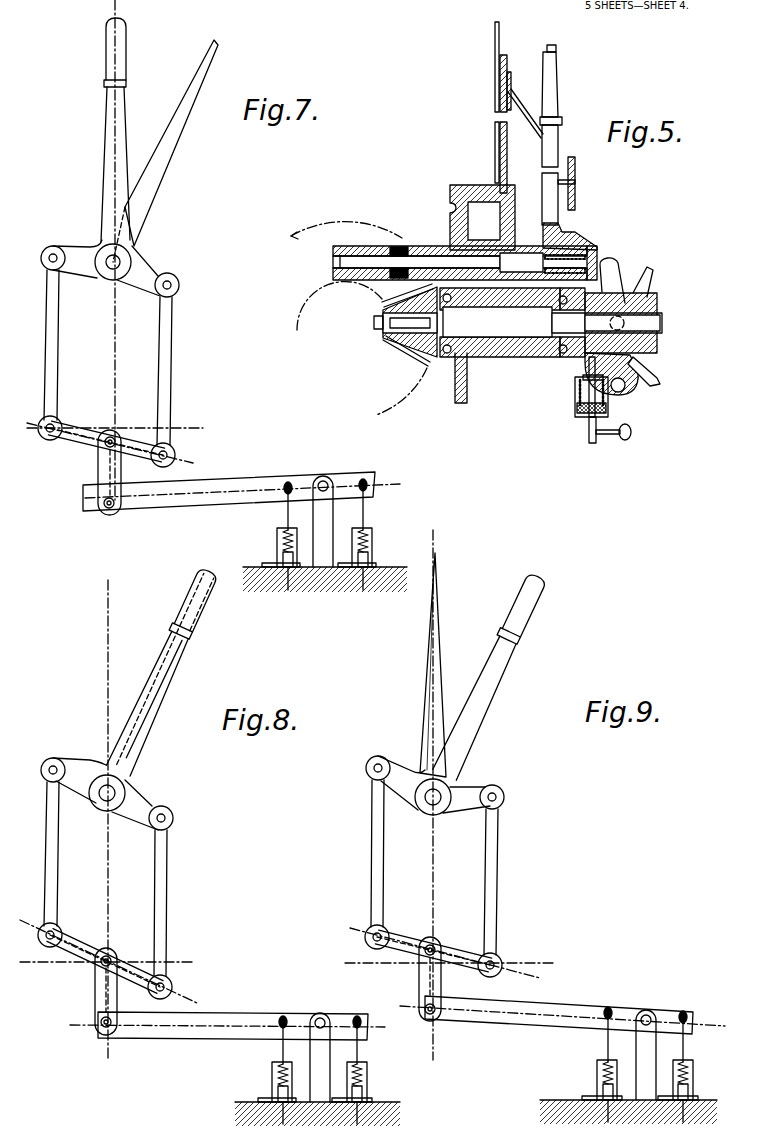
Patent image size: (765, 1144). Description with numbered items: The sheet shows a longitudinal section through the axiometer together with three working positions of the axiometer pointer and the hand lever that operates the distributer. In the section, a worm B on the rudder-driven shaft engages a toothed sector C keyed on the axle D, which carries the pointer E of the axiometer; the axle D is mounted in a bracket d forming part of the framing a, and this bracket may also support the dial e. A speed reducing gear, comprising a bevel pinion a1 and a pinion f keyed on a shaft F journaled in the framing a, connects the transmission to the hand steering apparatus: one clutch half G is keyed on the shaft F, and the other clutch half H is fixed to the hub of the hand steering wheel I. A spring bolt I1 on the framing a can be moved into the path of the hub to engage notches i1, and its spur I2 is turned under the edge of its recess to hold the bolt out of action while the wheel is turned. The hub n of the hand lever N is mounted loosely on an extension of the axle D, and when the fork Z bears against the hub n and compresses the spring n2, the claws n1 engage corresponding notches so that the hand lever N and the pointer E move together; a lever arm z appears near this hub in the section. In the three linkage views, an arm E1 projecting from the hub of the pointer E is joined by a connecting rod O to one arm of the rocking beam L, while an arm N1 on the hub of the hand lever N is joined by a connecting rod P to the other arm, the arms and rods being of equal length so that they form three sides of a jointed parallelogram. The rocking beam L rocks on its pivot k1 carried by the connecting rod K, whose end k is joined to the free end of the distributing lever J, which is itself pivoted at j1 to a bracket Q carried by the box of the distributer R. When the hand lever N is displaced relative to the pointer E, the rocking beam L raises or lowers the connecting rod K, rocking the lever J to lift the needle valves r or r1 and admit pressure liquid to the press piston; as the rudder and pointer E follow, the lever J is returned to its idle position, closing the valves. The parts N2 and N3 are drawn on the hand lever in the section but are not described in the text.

In FIG. 7, the hand lever N is at (108, 45).
In FIG. 5, the hand lever N is at (559, 98).
In FIG. 8, the hand lever N is at (163, 684).
In FIG. 9, the hand lever N is at (498, 671).
In FIG. 7, the arm of the hand lever N1 is at (75, 252).
In FIG. 8, the arm of the hand lever N1 is at (76, 776).
In FIG. 9, the arm of the hand lever N1 is at (400, 768).
In FIG. 5, the lever guide pin N2 is at (576, 183).
In FIG. 5, the lever cap N3 is at (556, 47).
In FIG. 7, the pointer E is at (199, 87).
In FIG. 5, the pointer E is at (499, 62).
In FIG. 8, the pointer E is at (198, 616).
In FIG. 9, the pointer E is at (428, 663).
In FIG. 7, the arm of the pointer E1 is at (148, 273).
In FIG. 8, the arm of the pointer E1 is at (139, 812).
In FIG. 9, the arm of the pointer E1 is at (470, 792).
In FIG. 7, the connecting rod P is at (53, 362).
In FIG. 8, the connecting rod P is at (55, 878).
In FIG. 9, the connecting rod P is at (384, 867).
In FIG. 7, the connecting rod O is at (165, 373).
In FIG. 8, the connecting rod O is at (166, 895).
In FIG. 9, the connecting rod O is at (494, 864).
In FIG. 7, the rocking beam L is at (76, 432).
In FIG. 8, the rocking beam L is at (80, 942).
In FIG. 9, the rocking beam L is at (405, 936).
In FIG. 7, the connecting rod K is at (105, 462).
In FIG. 8, the connecting rod K is at (100, 991).
In FIG. 9, the connecting rod K is at (430, 975).
In FIG. 7, the end of the connecting rod k is at (106, 514).
In FIG. 8, the end of the connecting rod k is at (100, 1036).
In FIG. 9, the end of the connecting rod k is at (420, 1004).
In FIG. 7, the pivot k1 is at (118, 437).
In FIG. 8, the pivot k1 is at (112, 955).
In FIG. 9, the pivot k1 is at (437, 942).
In FIG. 7, the lever J is at (268, 484).
In FIG. 8, the lever J is at (228, 1013).
In FIG. 9, the lever J is at (564, 1008).
In FIG. 7, the pivot j1 is at (327, 476).
In FIG. 8, the pivot j1 is at (319, 1013).
In FIG. 9, the pivot j1 is at (643, 1010).
In FIG. 7, the bracket Q is at (330, 518).
In FIG. 8, the bracket Q is at (322, 1047).
In FIG. 9, the bracket Q is at (648, 1050).
In FIG. 7, the needle valves r is at (285, 556).
In FIG. 8, the needle valves r is at (280, 1092).
In FIG. 9, the needle valves r is at (605, 1090).
In FIG. 7, the needle valves r1 is at (368, 557).
In FIG. 8, the needle valves r1 is at (363, 1094).
In FIG. 9, the needle valves r1 is at (688, 1090).
In FIG. 7, the distributer R is at (333, 578).
In FIG. 8, the distributer R is at (236, 1102).
In FIG. 9, the distributer R is at (548, 1100).
In FIG. 5, the dial e is at (494, 34).
In FIG. 5, the hub of the hand lever n is at (604, 252).
In FIG. 5, the claws n1 is at (570, 235).
In FIG. 5, the spring n2 is at (592, 246).
In FIG. 5, the fork Z is at (620, 262).
In FIG. 5, the lever arm z is at (648, 388).
In FIG. 5, the hand steering wheel I is at (652, 290).
In FIG. 5, the spring bolt I1 is at (592, 443).
In FIG. 5, the spur I2 is at (608, 410).
In FIG. 5, the notches i1 is at (586, 385).
In FIG. 5, the clutch half G is at (583, 355).
In FIG. 5, the clutch half H is at (556, 356).
In FIG. 5, the shaft F is at (500, 340).
In FIG. 5, the frame a is at (455, 390).
In FIG. 5, the bevel pinion a1 is at (316, 228).
In FIG. 5, the pinion f is at (407, 358).
In FIG. 5, the toothed sector C is at (342, 280).
In FIG. 5, the worm B is at (305, 300).
In FIG. 5, the axle D is at (362, 250).
In FIG. 5, the bracket d is at (449, 216).